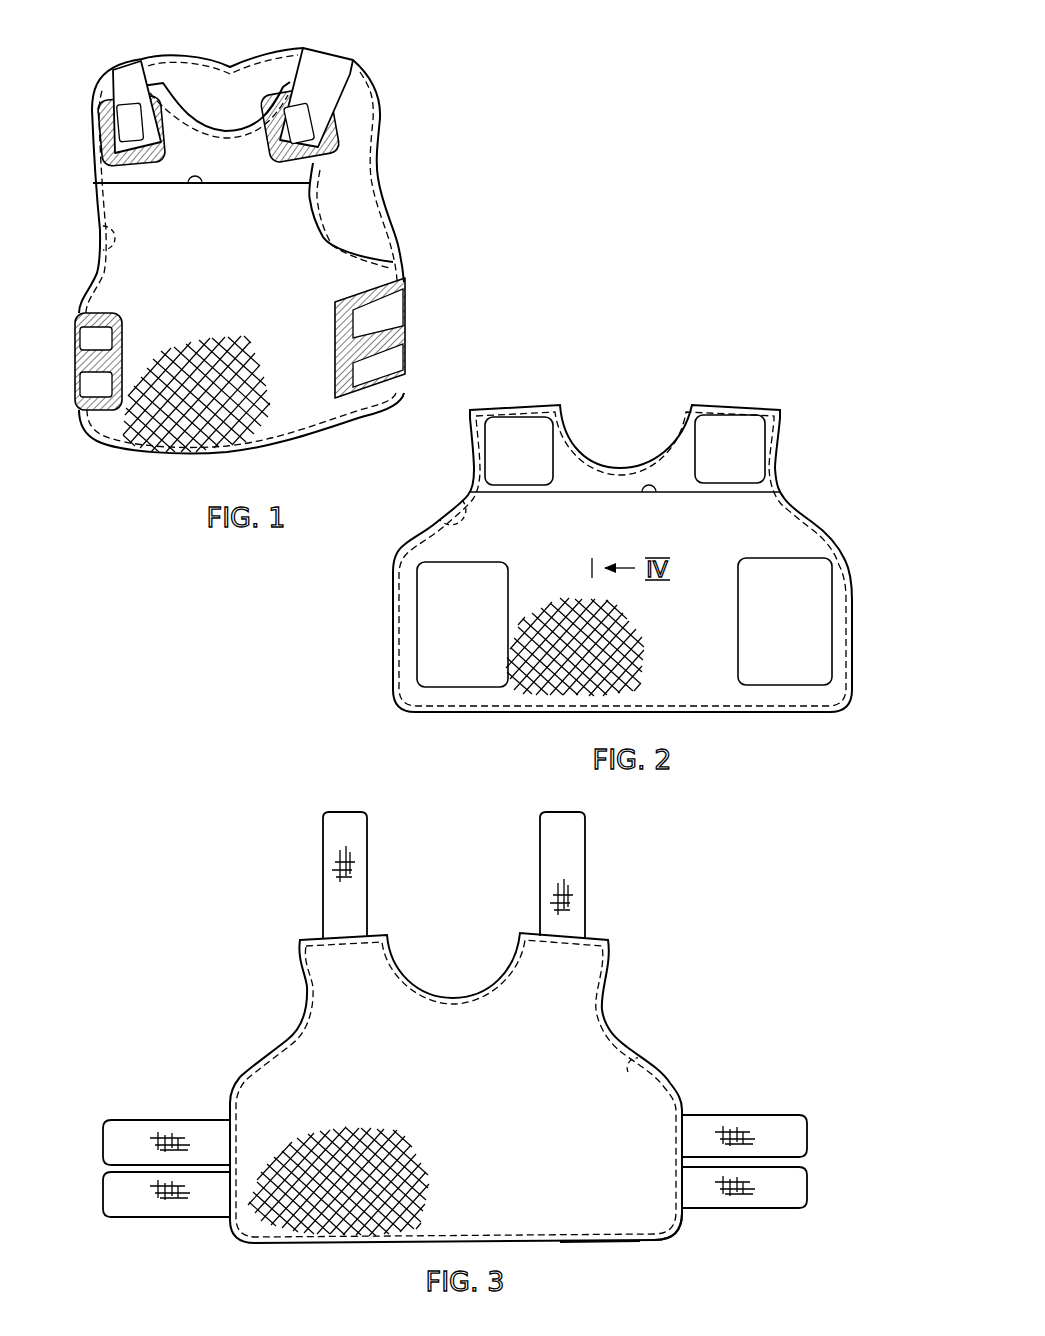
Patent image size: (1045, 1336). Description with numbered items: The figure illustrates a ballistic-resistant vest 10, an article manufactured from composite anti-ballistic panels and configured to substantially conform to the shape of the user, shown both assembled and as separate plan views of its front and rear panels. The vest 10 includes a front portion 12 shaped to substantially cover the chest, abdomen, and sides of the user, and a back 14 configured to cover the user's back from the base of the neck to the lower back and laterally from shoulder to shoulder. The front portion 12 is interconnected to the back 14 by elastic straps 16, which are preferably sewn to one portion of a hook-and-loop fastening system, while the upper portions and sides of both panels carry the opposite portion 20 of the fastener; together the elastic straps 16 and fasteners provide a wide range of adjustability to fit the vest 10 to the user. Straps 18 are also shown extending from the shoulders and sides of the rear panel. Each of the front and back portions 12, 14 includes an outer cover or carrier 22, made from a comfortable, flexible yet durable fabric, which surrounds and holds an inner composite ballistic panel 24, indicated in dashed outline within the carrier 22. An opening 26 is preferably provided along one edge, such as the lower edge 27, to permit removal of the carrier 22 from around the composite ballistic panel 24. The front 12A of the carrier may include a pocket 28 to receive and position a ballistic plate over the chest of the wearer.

In FIG. 1, the ballistic-resistant vest 10 is at (412, 122).
In FIG. 1, the front portion 12 is at (165, 442).
In FIG. 2, the front portion 12 is at (857, 472).
In FIG. 2, the front of the carrier 12A is at (708, 642).
In FIG. 1, the back 14 is at (349, 205).
In FIG. 3, the back 14 is at (700, 977).
In FIG. 1, the elastic straps 16 is at (126, 73).
In FIG. 1, the fastening strap 18 is at (322, 65).
In FIG. 3, the fastening strap 18 is at (572, 858).
In FIG. 1, the opposite portion of the fastener 20 is at (397, 356).
In FIG. 2, the opposite portion of the fastener 20 is at (745, 433).
In FIG. 2, the outer cover or carrier 22 is at (817, 526).
In FIG. 3, the outer cover or carrier 22 is at (620, 1038).
In FIG. 1, the inner composite ballistic panel 24 is at (103, 228).
In FIG. 2, the inner composite ballistic panel 24 is at (460, 500).
In FIG. 3, the inner composite ballistic panel 24 is at (633, 1063).
In FIG. 3, the opening 26 is at (586, 1253).
In FIG. 3, the lower edge 27 is at (663, 1238).
In FIG. 1, the pocket 28 is at (202, 184).
In FIG. 2, the pocket 28 is at (656, 493).